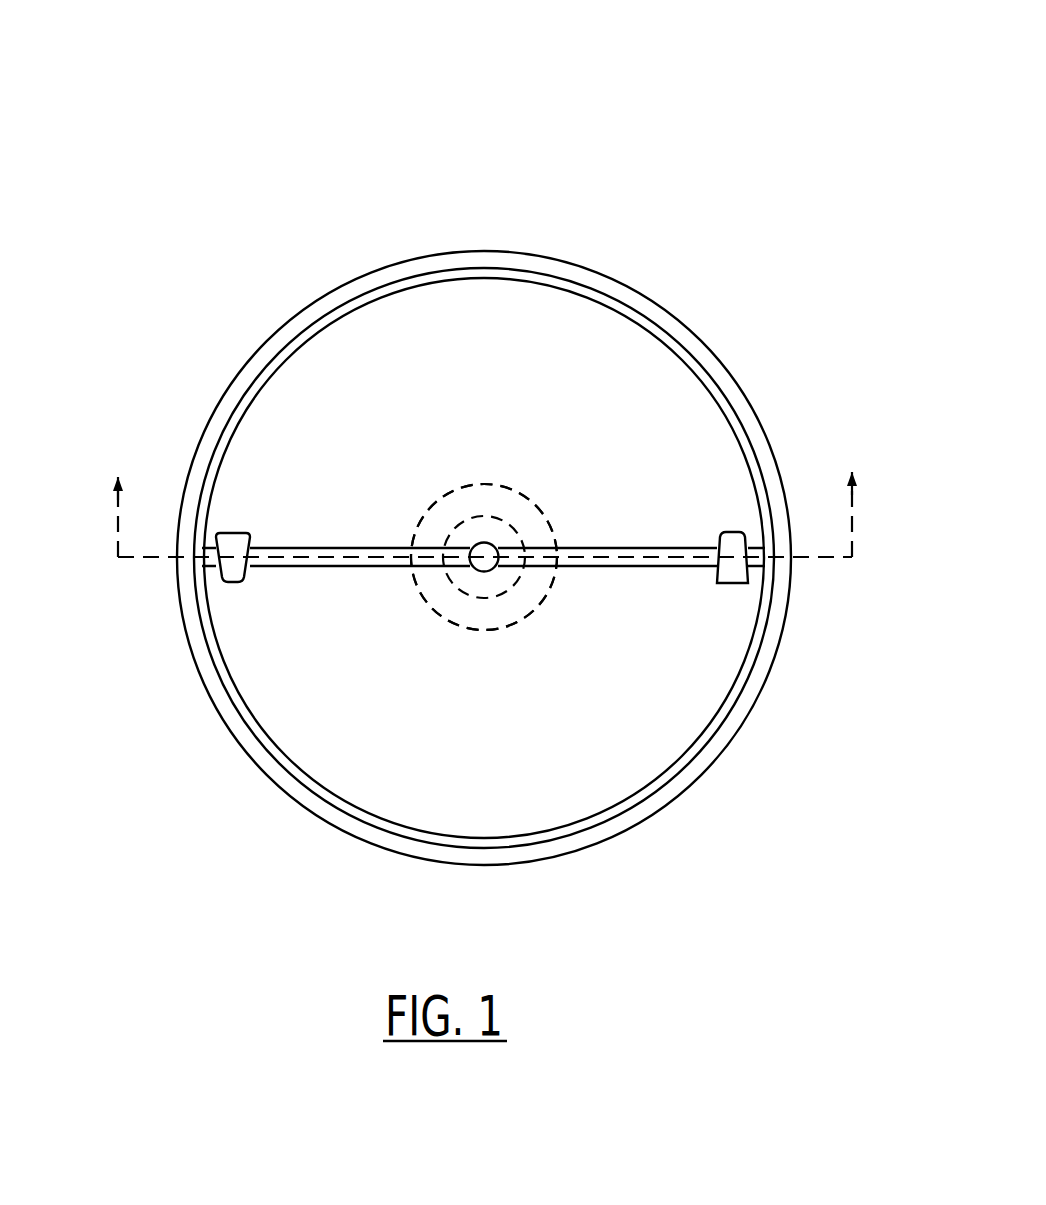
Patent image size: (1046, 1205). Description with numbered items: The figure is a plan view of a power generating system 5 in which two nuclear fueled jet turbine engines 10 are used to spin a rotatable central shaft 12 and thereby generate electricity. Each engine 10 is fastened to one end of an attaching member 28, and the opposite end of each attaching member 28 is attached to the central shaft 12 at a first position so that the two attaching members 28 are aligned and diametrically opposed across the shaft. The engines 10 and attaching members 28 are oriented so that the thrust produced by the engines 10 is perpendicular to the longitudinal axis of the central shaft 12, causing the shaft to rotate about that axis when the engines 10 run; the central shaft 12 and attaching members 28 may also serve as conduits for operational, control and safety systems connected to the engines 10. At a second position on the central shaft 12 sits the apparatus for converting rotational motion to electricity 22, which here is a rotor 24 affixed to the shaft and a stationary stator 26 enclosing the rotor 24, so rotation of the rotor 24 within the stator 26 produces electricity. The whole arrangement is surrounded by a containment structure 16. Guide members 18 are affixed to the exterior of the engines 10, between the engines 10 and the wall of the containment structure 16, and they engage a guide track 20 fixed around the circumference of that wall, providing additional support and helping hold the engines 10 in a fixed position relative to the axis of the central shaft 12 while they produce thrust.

The power generating system 5 is at (487, 173).
The nuclear fueled jet turbine engine 10 is at (235, 530).
The rotatable central shaft 12 is at (482, 542).
The containment structure 16 is at (195, 685).
The guide member 18 is at (208, 568).
The guide track 20 is at (198, 645).
The apparatus for converting rotational motion to electricity 22 is at (535, 499).
The rotor 24 is at (448, 580).
The stator 26 is at (472, 632).
The attaching member 28 is at (335, 547).